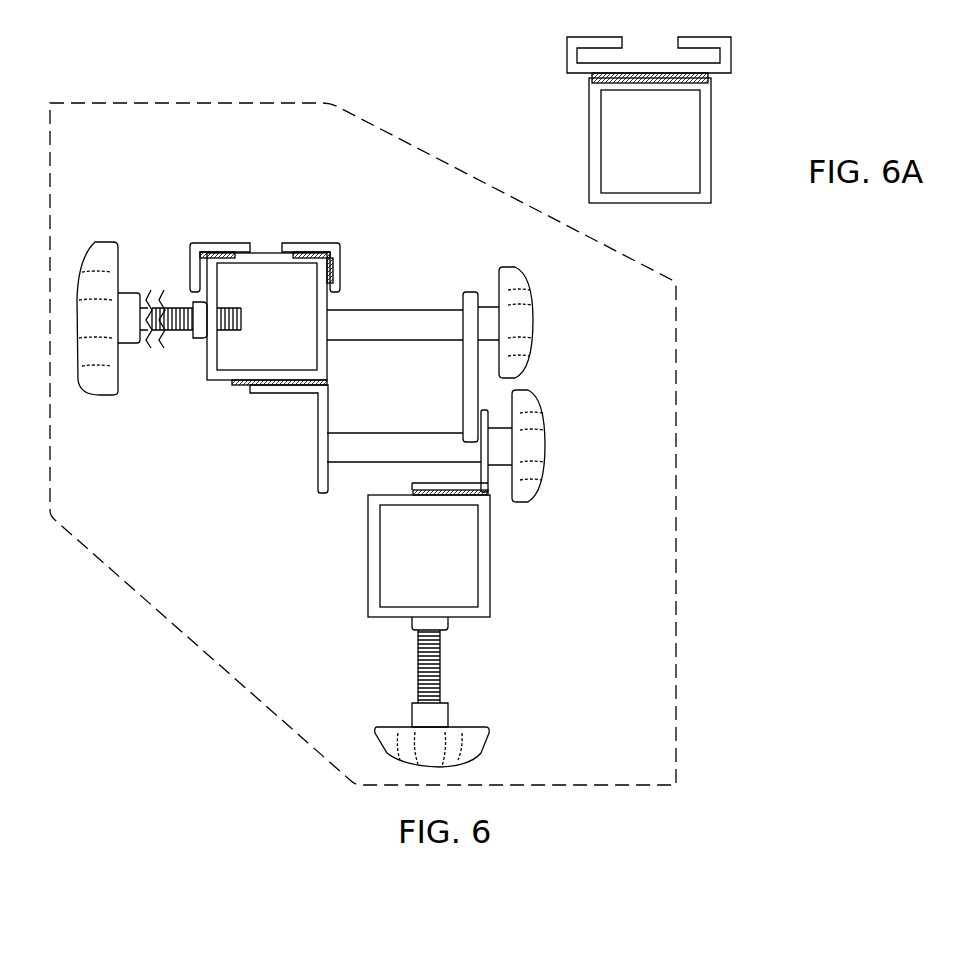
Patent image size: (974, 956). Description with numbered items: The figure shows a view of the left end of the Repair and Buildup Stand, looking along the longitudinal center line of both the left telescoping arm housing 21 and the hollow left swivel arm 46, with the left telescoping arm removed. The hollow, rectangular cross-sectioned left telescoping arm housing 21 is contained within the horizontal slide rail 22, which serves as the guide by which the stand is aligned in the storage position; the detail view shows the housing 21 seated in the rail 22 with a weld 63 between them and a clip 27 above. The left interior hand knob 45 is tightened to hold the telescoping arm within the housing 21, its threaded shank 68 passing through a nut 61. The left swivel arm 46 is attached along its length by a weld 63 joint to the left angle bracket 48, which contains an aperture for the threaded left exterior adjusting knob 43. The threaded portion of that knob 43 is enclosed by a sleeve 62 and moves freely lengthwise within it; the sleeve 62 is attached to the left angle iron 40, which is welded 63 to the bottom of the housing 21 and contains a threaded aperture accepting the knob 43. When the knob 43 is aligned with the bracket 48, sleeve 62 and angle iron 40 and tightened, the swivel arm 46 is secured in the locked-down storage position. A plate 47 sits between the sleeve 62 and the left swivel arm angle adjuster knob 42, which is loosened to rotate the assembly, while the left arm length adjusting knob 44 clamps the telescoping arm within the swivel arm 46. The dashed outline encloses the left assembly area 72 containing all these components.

In FIG. 6, the left telescoping arm housing 21 is at (207, 358).
In FIG. 6A, the left telescoping arm housing 21 is at (711, 175).
In FIG. 6, the horizontal slide rail 22 is at (305, 243).
In FIG. 6A, the channel clip 27 is at (567, 50).
In FIG. 6, the left angle iron 40 is at (323, 435).
In FIG. 6, the left swivel arm angle adjuster knob 42 is at (535, 310).
In FIG. 6, the left exterior adjusting knob 43 is at (545, 455).
In FIG. 6, the left arm length adjusting knob 44 is at (487, 745).
In FIG. 6, the left interior hand knob 45 is at (100, 242).
In FIG. 6, the left swivel arm 46 is at (490, 560).
In FIG. 6, the plate 47 is at (467, 292).
In FIG. 6, the left angle bracket 48 is at (490, 410).
In FIG. 6, the nut 61 is at (412, 623).
In FIG. 6, the sleeve 62 is at (405, 308).
In FIG. 6, the weld 63 is at (328, 246).
In FIG. 6A, the weld 63 is at (711, 78).
In FIG. 6, the threaded rod 68 is at (172, 303).
In FIG. 6, the left assembly area 72 is at (680, 510).